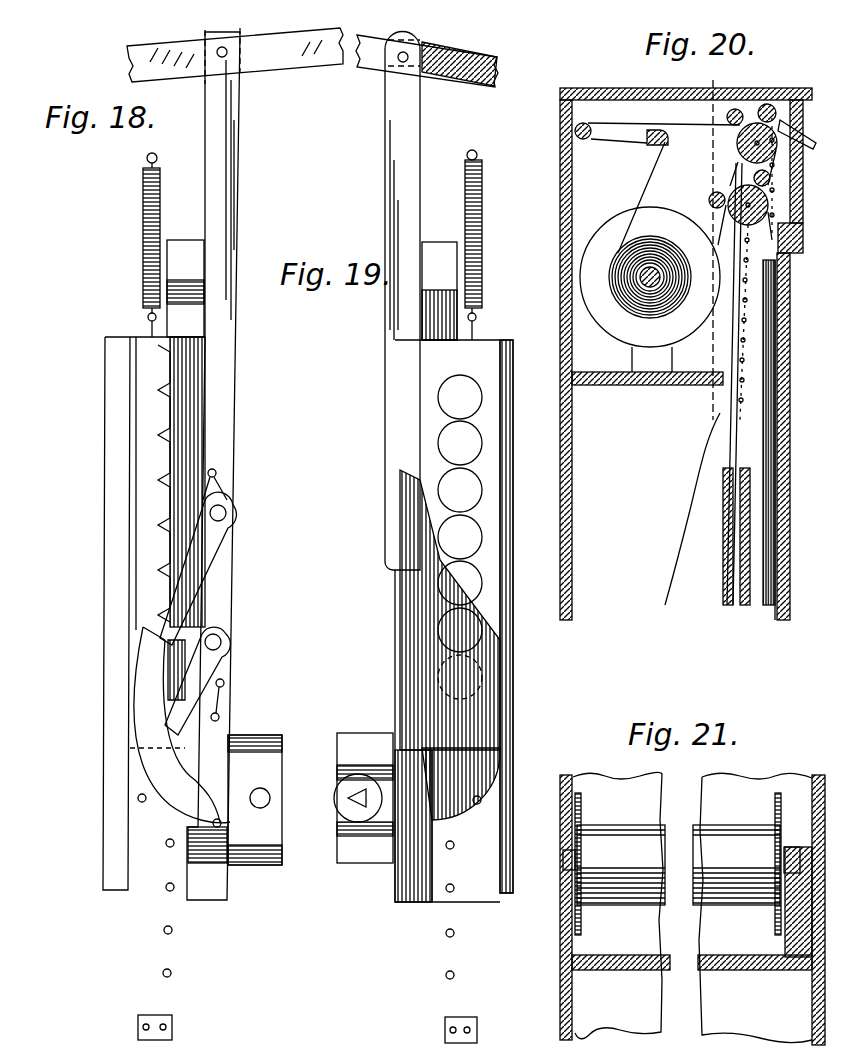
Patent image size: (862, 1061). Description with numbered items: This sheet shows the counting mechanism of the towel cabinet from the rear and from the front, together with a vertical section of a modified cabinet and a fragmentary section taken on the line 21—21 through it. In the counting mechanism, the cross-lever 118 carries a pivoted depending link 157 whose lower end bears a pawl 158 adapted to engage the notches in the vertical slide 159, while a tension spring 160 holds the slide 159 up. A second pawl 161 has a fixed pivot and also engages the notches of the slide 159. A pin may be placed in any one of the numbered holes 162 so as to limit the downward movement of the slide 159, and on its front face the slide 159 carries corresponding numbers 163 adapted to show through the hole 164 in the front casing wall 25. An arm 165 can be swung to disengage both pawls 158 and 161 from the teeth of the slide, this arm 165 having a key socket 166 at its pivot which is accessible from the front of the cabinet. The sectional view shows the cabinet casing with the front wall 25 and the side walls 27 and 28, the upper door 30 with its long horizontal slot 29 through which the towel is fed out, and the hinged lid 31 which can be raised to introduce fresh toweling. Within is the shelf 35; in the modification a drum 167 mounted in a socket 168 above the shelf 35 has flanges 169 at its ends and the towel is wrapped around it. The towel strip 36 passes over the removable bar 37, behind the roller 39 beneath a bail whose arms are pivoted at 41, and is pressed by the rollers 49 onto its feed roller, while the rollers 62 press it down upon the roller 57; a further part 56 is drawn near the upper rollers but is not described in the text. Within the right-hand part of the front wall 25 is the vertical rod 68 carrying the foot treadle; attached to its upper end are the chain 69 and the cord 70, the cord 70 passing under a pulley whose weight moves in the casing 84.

In FIG. 18, the cross-lever 118 is at (235, 56).
In FIG. 19, the cross-lever 118 is at (447, 75).
In FIG. 18, the depending link 157 is at (232, 166).
In FIG. 19, the depending link 157 is at (392, 152).
In FIG. 18, the tension spring 160 is at (143, 224).
In FIG. 19, the tension spring 160 is at (483, 222).
In FIG. 18, the vertical slide 159 is at (145, 467).
In FIG. 19, the vertical slide 159 is at (468, 735).
In FIG. 18, the pawl 158 is at (200, 572).
In FIG. 18, the pawl 161 is at (200, 663).
In FIG. 18, the arm 165 is at (134, 757).
In FIG. 19, the arm 165 is at (470, 776).
In FIG. 18, the holes 162 is at (175, 936).
In FIG. 19, the holes 162 is at (445, 970).
In FIG. 19, the numbers 163 is at (440, 590).
In FIG. 19, the hole 164 is at (482, 677).
In FIG. 19, the key socket 166 is at (350, 806).
In FIG. 20, the hinged lid 31 is at (620, 88).
In FIG. 20, the section line 21 is at (732, 82).
In FIG. 20, the rollers 49 is at (768, 104).
In FIG. 20, the roller 39 is at (575, 131).
In FIG. 20, the removable bar 37 is at (647, 143).
In FIG. 20, the towel strip 36 is at (641, 182).
In FIG. 20, the pivot 41 is at (737, 145).
In FIG. 20, the lever 56 is at (808, 140).
In FIG. 20, the horizontal slot 29 is at (800, 150).
In FIG. 20, the rollers 62 is at (710, 197).
In FIG. 20, the upper door 30 is at (803, 194).
In FIG. 20, the roller 57 is at (770, 212).
In FIG. 20, the flanges 169 is at (650, 277).
In FIG. 20, the chain 69 is at (746, 326).
In FIG. 20, the cord 70 is at (745, 364).
In FIG. 20, the shelf 35 is at (611, 386).
In FIG. 21, the shelf 35 is at (615, 971).
In FIG. 20, the front wall 25 is at (790, 463).
In FIG. 20, the casing 84 is at (724, 543).
In FIG. 20, the vertical rod 68 is at (772, 525).
In FIG. 21, the drum 167 is at (678, 864).
In FIG. 21, the socket 168 is at (565, 856).
In FIG. 21, the side wall 28 is at (562, 1000).
In FIG. 21, the side wall 27 is at (815, 1004).